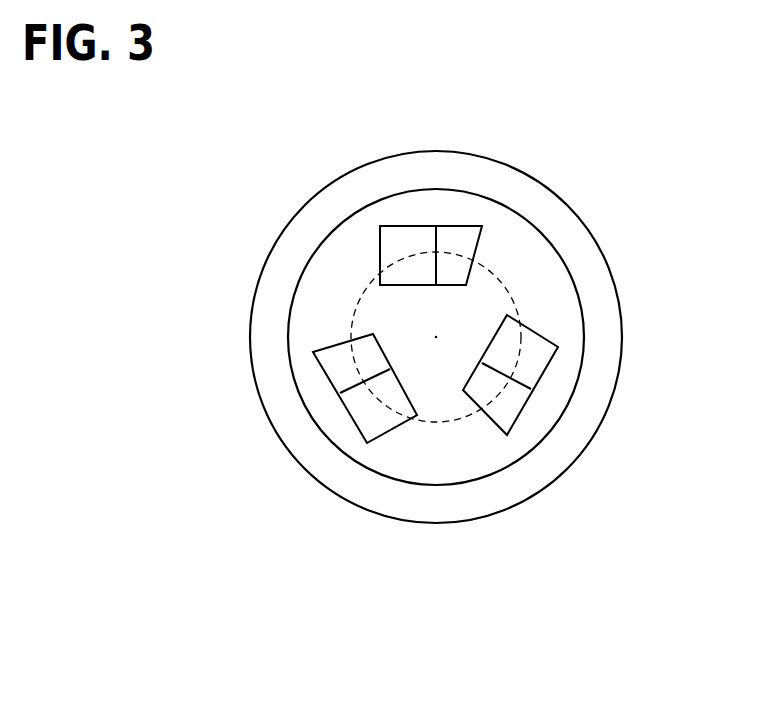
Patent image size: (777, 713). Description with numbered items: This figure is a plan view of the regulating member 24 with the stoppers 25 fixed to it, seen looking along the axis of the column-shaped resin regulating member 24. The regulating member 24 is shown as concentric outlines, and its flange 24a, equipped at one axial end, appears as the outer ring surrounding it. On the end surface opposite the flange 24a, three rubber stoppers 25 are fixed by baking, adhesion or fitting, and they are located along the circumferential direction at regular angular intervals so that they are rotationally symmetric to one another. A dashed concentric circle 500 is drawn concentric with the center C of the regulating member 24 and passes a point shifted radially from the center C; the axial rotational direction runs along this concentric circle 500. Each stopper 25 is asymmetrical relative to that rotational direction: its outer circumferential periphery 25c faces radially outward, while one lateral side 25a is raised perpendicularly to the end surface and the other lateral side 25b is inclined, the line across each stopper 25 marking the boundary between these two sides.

The regulating member 24 is at (550, 242).
The flange 24a is at (503, 177).
The stopper 25 is at (457, 267).
The lateral side 25a is at (563, 272).
The lateral side 25b is at (648, 298).
The outer circumferential periphery 25c is at (455, 227).
The concentric circle 500 is at (433, 423).
The center C is at (437, 337).